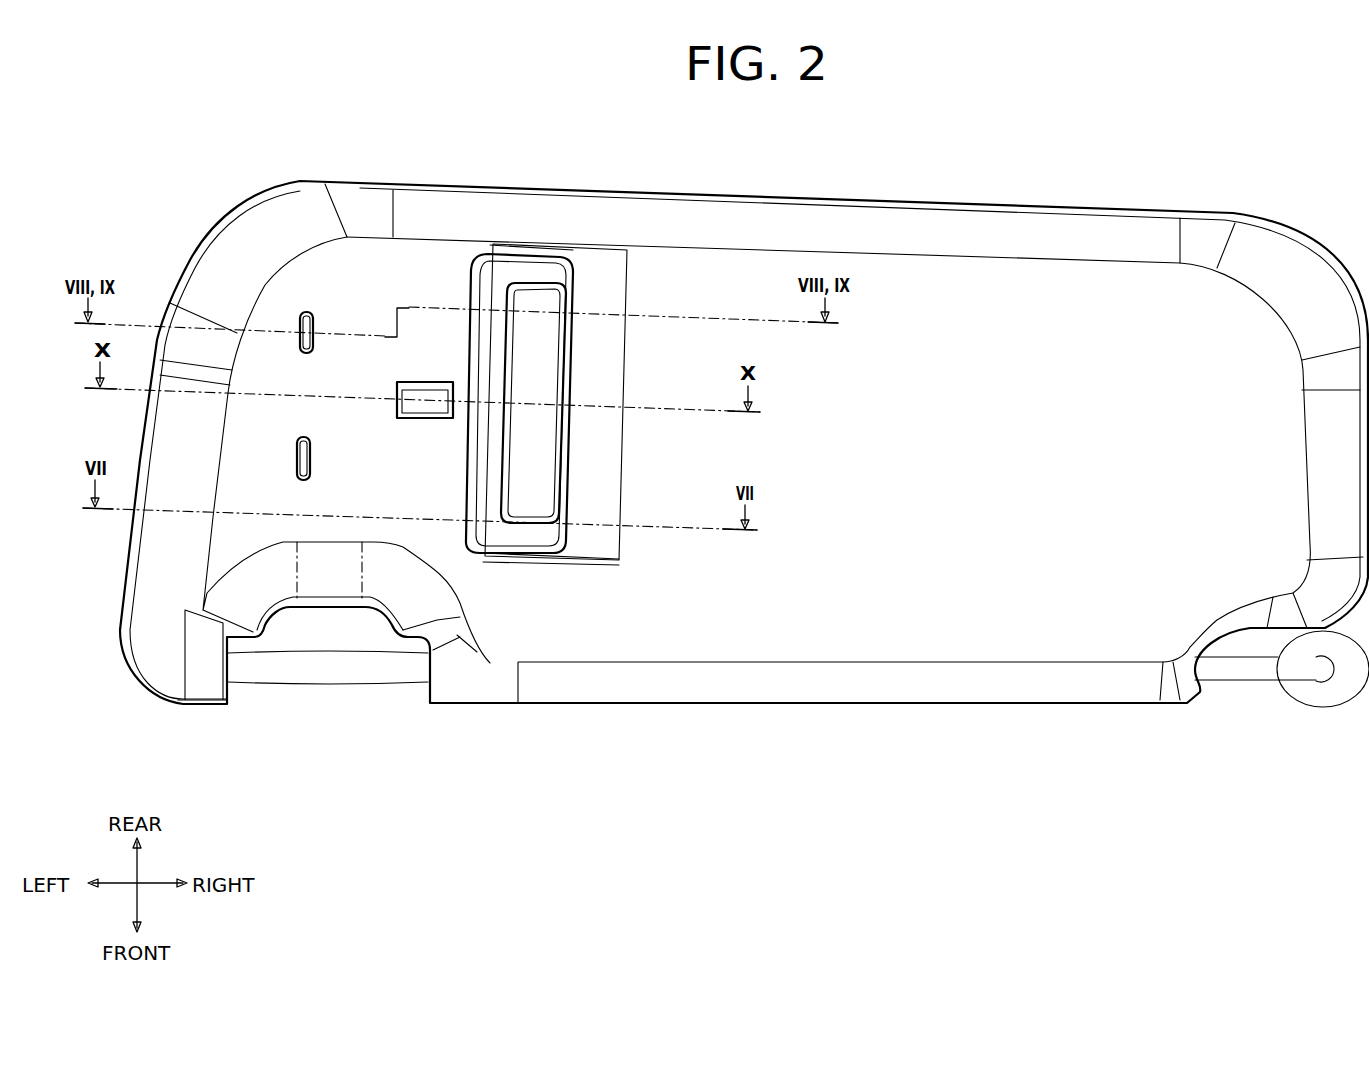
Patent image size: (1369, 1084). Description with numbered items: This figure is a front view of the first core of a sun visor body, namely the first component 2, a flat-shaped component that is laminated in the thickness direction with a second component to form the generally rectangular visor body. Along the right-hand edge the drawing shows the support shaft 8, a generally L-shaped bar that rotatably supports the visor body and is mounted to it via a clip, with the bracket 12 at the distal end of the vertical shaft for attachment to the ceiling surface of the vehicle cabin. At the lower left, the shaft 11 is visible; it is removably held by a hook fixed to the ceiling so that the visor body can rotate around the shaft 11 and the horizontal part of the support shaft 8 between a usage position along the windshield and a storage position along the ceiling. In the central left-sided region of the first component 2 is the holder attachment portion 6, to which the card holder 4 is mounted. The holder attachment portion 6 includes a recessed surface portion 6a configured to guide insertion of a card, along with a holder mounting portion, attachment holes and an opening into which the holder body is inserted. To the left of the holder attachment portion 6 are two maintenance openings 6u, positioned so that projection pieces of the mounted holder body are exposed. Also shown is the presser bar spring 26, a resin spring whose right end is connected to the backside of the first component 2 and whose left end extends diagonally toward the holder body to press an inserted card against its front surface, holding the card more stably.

The first component 2 is at (892, 617).
The card holder 4 is at (477, 250).
The holder attachment portion 6 is at (578, 245).
The recessed surface portion 6a is at (630, 247).
The maintenance openings 6u is at (292, 317).
The support shaft 8 is at (1243, 683).
The shaft 11 is at (308, 686).
The bracket 12 is at (1343, 706).
The presser bar spring 26 is at (425, 418).